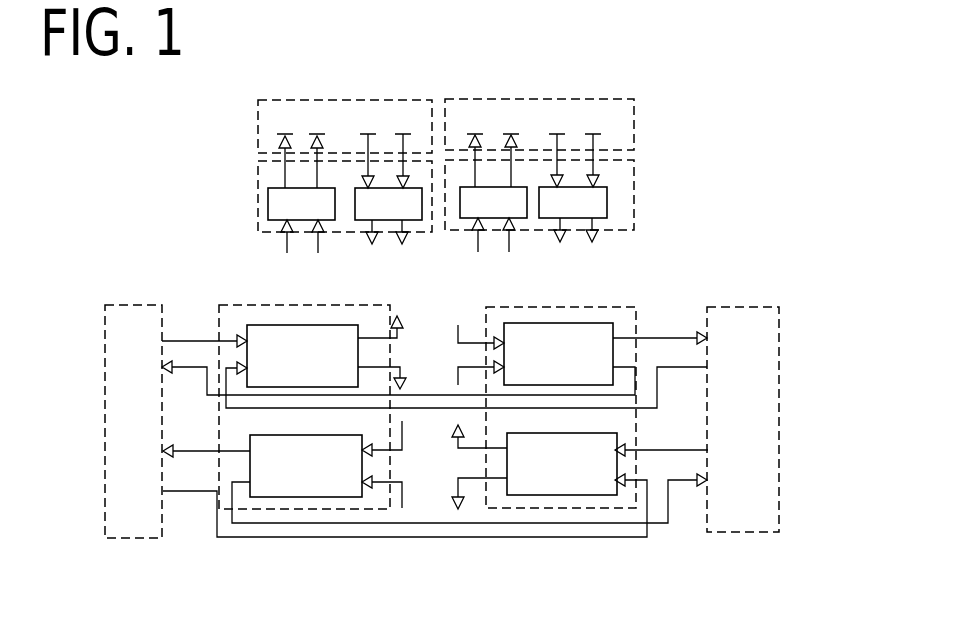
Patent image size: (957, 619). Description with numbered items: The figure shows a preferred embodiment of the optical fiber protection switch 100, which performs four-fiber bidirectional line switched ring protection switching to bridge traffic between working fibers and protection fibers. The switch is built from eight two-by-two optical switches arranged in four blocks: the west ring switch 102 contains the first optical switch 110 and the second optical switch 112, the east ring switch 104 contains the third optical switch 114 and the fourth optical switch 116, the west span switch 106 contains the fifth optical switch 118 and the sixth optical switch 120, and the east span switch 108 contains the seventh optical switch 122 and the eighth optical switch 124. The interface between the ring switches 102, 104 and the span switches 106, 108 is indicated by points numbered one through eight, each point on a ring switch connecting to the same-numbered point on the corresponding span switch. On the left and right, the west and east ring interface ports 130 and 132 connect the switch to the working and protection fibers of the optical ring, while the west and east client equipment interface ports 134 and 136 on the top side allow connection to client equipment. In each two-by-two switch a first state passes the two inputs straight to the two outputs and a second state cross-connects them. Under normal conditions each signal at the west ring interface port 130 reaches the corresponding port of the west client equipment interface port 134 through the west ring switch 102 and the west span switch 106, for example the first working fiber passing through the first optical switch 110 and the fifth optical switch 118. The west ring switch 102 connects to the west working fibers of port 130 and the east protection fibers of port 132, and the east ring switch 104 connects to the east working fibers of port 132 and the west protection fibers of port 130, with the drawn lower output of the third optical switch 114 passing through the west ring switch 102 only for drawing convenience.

The optical fiber protection switch 100 is at (766, 194).
The west ring switch 102 is at (255, 512).
The east ring switch 104 is at (613, 510).
The west span switch 106 is at (258, 182).
The east span switch 108 is at (634, 186).
The first optical switch 110 is at (302, 356).
The second optical switch 112 is at (306, 466).
The third optical switch 114 is at (558, 354).
The fourth optical switch 116 is at (562, 464).
The fifth optical switch 118 is at (268, 210).
The sixth optical switch 120 is at (417, 220).
The seventh optical switch 122 is at (522, 218).
The eighth optical switch 124 is at (607, 208).
The west ring interface port 130 is at (108, 305).
The east ring interface port 132 is at (765, 306).
The west client equipment interface port 134 is at (258, 100).
The east client equipment interface port 136 is at (634, 99).